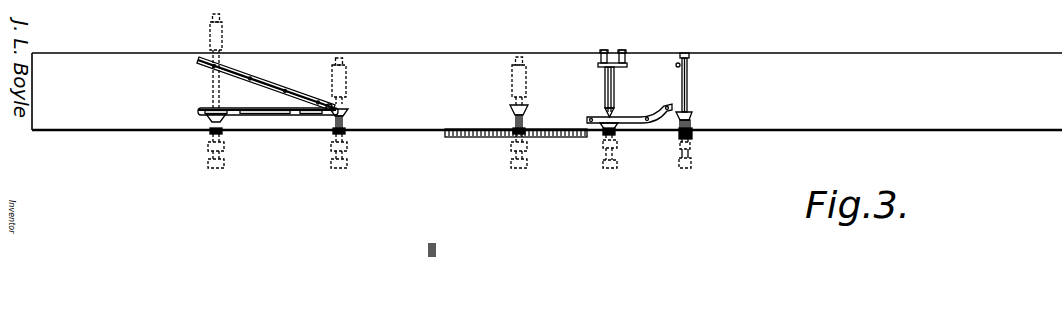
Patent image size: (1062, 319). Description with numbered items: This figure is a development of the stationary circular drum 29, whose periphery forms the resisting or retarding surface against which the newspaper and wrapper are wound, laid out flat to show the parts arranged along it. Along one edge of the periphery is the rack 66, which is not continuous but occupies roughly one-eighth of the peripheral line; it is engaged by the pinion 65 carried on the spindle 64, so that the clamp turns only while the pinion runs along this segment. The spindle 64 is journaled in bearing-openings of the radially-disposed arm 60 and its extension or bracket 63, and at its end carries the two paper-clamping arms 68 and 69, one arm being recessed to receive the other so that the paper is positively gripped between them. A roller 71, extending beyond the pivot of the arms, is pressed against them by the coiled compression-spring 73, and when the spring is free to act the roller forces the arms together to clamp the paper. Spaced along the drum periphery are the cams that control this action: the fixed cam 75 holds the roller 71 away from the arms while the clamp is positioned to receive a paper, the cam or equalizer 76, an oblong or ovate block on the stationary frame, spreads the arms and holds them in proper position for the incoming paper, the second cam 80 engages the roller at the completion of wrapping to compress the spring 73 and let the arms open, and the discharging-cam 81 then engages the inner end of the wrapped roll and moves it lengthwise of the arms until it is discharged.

The stationary circular drum 29 is at (822, 60).
The radially-disposed arm 60 is at (680, 146).
The extension or bracket 63 is at (688, 166).
The spindle 64 is at (681, 154).
The pinion 65 is at (694, 137).
The rack 66 is at (458, 135).
The paper-clamping arm 68 is at (605, 78).
The paper-clamping arm 69 is at (614, 90).
The roller 71 is at (692, 114).
The coiled compression-spring 73 is at (692, 124).
The fixed cam 75 is at (658, 121).
The cam or equalizer 76 is at (604, 65).
The second cam 80 is at (248, 116).
The discharging-cam 81 is at (252, 75).